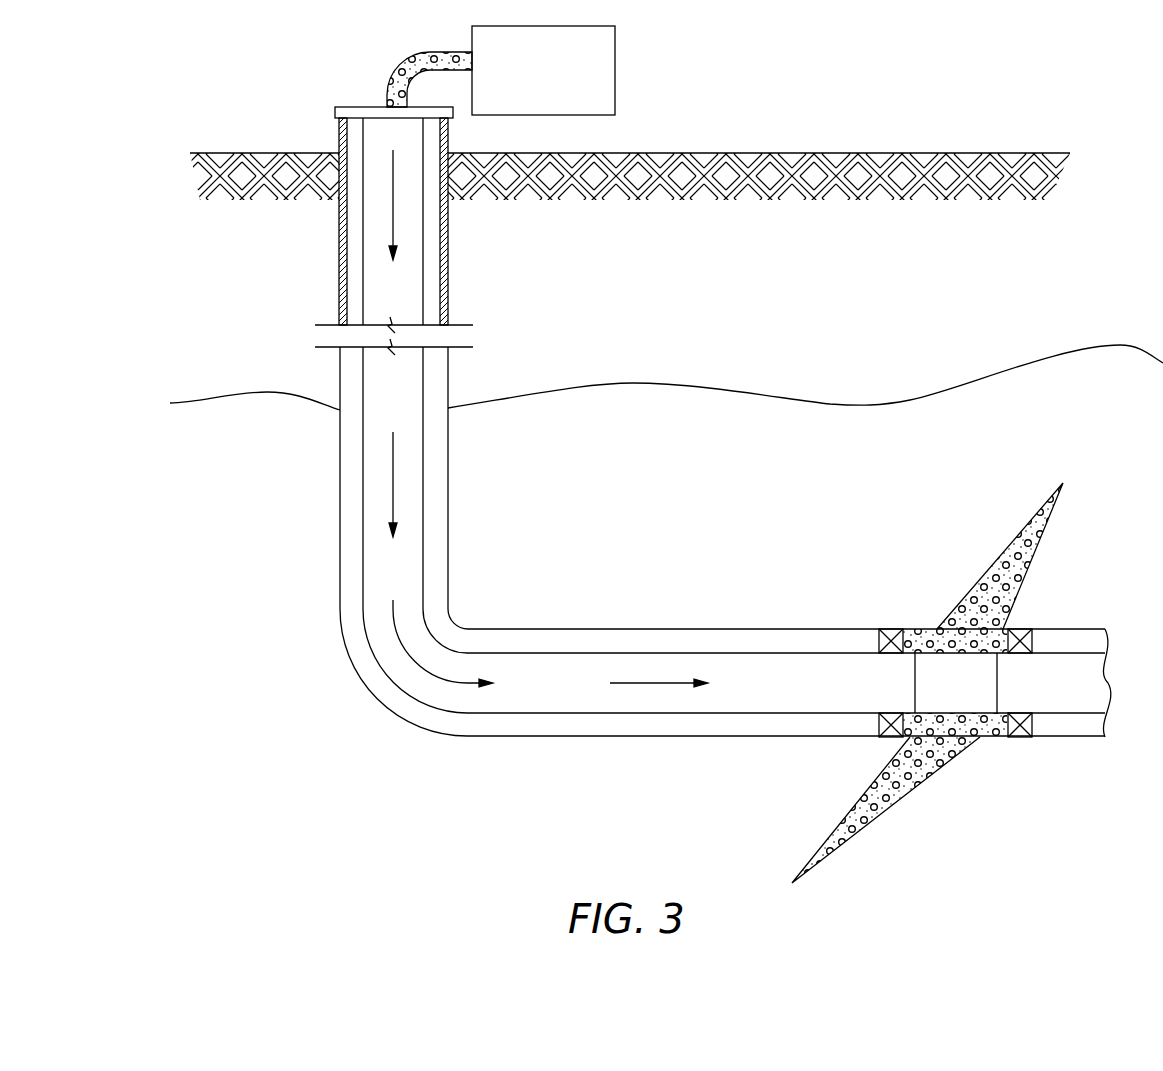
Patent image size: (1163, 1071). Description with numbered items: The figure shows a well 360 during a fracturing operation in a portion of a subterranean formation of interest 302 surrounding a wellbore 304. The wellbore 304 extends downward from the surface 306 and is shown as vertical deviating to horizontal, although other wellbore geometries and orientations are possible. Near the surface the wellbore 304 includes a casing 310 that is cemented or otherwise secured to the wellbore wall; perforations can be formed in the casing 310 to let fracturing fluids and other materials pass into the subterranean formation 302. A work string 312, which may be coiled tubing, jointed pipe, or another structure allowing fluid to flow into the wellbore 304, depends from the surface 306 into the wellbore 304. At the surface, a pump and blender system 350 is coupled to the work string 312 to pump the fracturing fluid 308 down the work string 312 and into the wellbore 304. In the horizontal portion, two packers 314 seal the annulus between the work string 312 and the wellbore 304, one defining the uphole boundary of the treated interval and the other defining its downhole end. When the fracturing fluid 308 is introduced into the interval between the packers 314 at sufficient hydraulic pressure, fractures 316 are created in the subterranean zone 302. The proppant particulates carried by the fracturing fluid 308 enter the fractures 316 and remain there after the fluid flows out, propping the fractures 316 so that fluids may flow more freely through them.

The subterranean formation of interest 302 is at (760, 457).
The wellbore 304 is at (353, 223).
The surface 306 is at (852, 152).
The fracturing fluid 308 is at (397, 70).
The casing 310 is at (340, 272).
The work string 312 is at (363, 477).
The packers 314 is at (892, 628).
The fractures 316 is at (992, 547).
The pump and blender system 350 is at (543, 70).
The well 360 is at (378, 717).